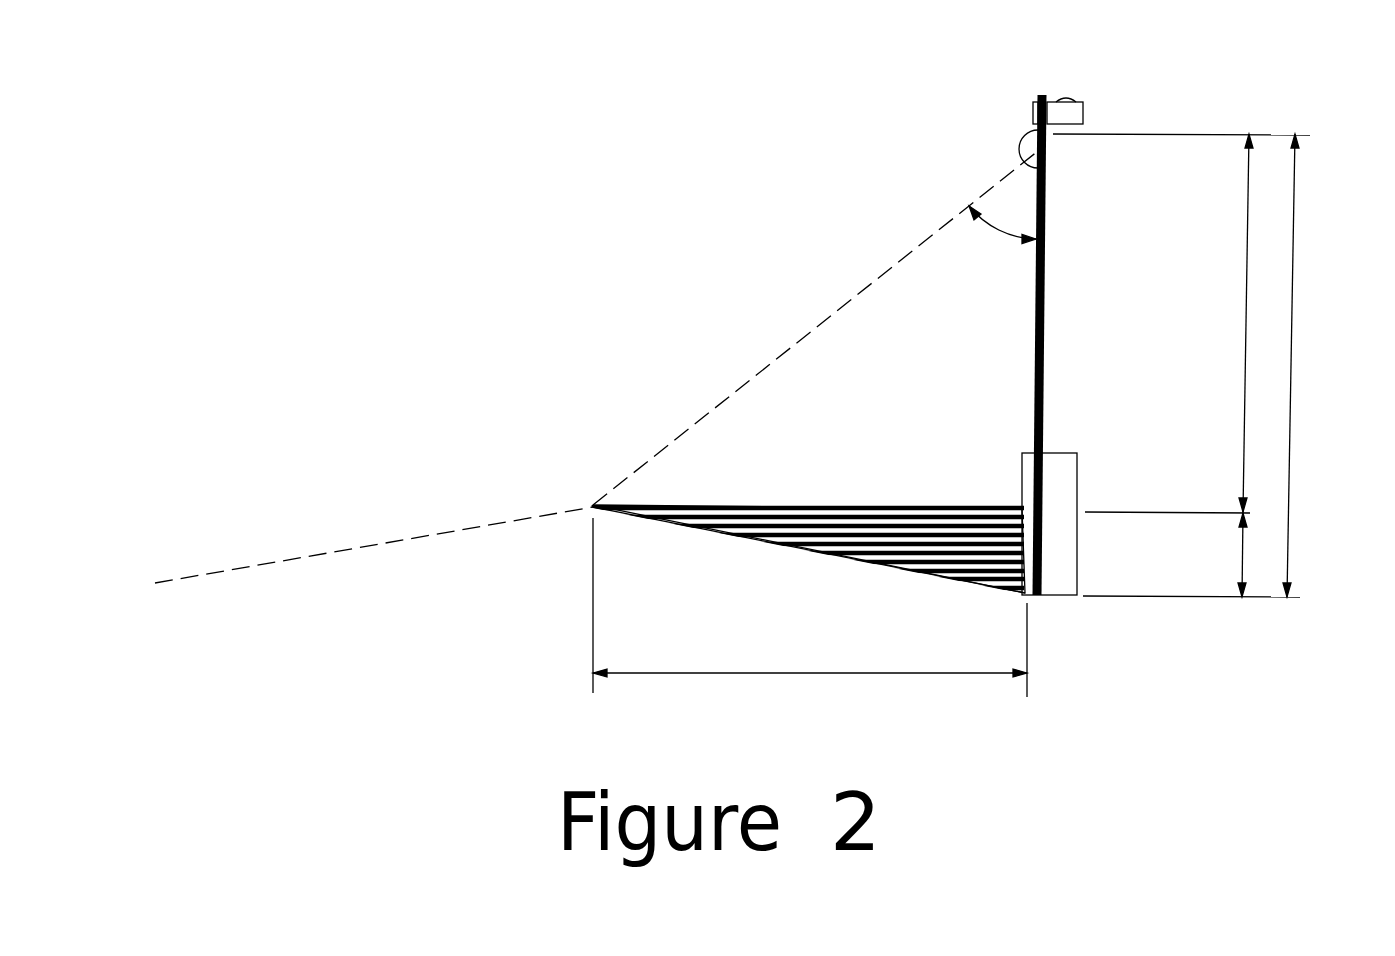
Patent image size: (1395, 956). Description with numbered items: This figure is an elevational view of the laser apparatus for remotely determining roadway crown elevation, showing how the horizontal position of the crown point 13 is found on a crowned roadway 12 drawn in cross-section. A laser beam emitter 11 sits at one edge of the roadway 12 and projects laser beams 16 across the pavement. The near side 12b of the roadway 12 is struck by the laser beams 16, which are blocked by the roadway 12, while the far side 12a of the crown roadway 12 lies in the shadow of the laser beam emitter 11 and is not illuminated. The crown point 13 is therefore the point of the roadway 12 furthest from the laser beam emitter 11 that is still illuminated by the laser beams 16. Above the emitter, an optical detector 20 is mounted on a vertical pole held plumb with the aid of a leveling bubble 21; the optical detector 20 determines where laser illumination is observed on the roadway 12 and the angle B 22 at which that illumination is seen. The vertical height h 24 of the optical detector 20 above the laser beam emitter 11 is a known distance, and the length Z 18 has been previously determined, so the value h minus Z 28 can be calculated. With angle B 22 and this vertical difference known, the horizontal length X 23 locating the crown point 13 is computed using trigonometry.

The laser beam emitter 11 is at (1080, 475).
The roadway 12 is at (532, 553).
The far side of the crown roadway 12a is at (373, 543).
The near side of roadway 12b is at (808, 550).
The crown point 13 is at (595, 503).
The laser beams 16 is at (955, 507).
The length Z 18 is at (1233, 535).
The optical detector 20 is at (1007, 130).
The leveling bubble 21 is at (1085, 102).
The angle B 22 is at (965, 222).
The length X 23 is at (855, 680).
The height h 24 is at (1298, 282).
The h minus Z 28 is at (1240, 242).